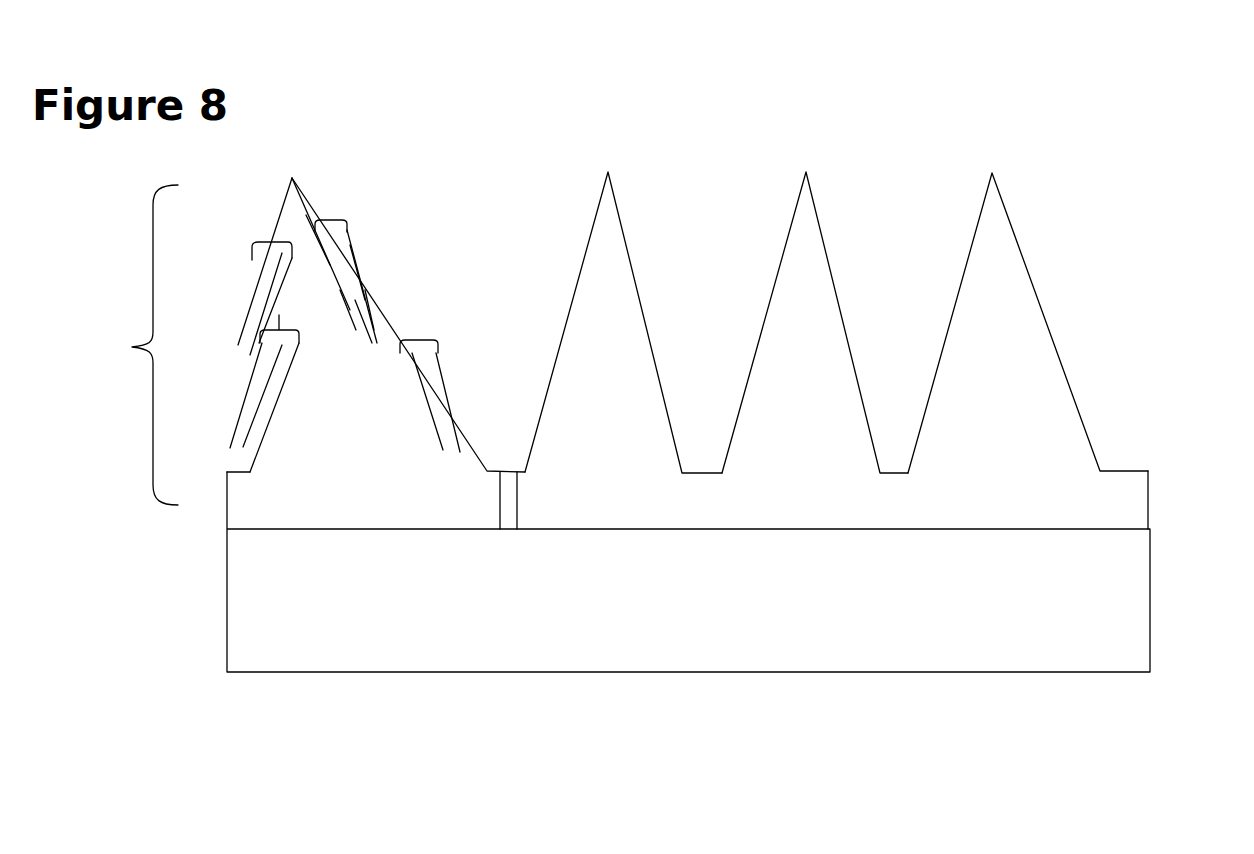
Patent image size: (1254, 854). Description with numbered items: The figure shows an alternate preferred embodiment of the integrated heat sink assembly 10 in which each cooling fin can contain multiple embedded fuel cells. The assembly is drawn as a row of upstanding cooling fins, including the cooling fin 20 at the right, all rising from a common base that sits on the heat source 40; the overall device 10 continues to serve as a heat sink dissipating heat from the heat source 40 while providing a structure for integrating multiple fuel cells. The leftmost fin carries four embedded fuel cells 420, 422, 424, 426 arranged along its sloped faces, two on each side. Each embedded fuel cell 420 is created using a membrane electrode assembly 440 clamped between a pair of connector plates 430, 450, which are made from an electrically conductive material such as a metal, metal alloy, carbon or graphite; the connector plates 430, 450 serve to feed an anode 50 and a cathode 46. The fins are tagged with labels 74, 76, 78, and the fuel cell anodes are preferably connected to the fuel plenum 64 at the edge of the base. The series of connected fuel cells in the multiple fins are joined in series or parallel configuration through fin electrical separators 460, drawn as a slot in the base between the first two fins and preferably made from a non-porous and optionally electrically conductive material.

The integrated heat sink assembly 10 is at (172, 345).
The cooling fin 20 is at (992, 173).
The heat source 40 is at (928, 650).
The cathode 46 is at (368, 300).
The anode 50 is at (357, 308).
The fuel plenum 64 is at (1148, 505).
The first projection 74 is at (292, 178).
The second projection 76 is at (608, 172).
The third projection 78 is at (806, 172).
The embedded fuel cell 420 is at (329, 220).
The embedded fuel cell 422 is at (420, 340).
The embedded fuel cell 424 is at (273, 230).
The embedded fuel cell 426 is at (279, 315).
The connector plate 430 is at (361, 274).
The membrane electrode assembly 440 is at (366, 317).
The connector plate 450 is at (323, 258).
The fin electrical separator 460 is at (508, 517).